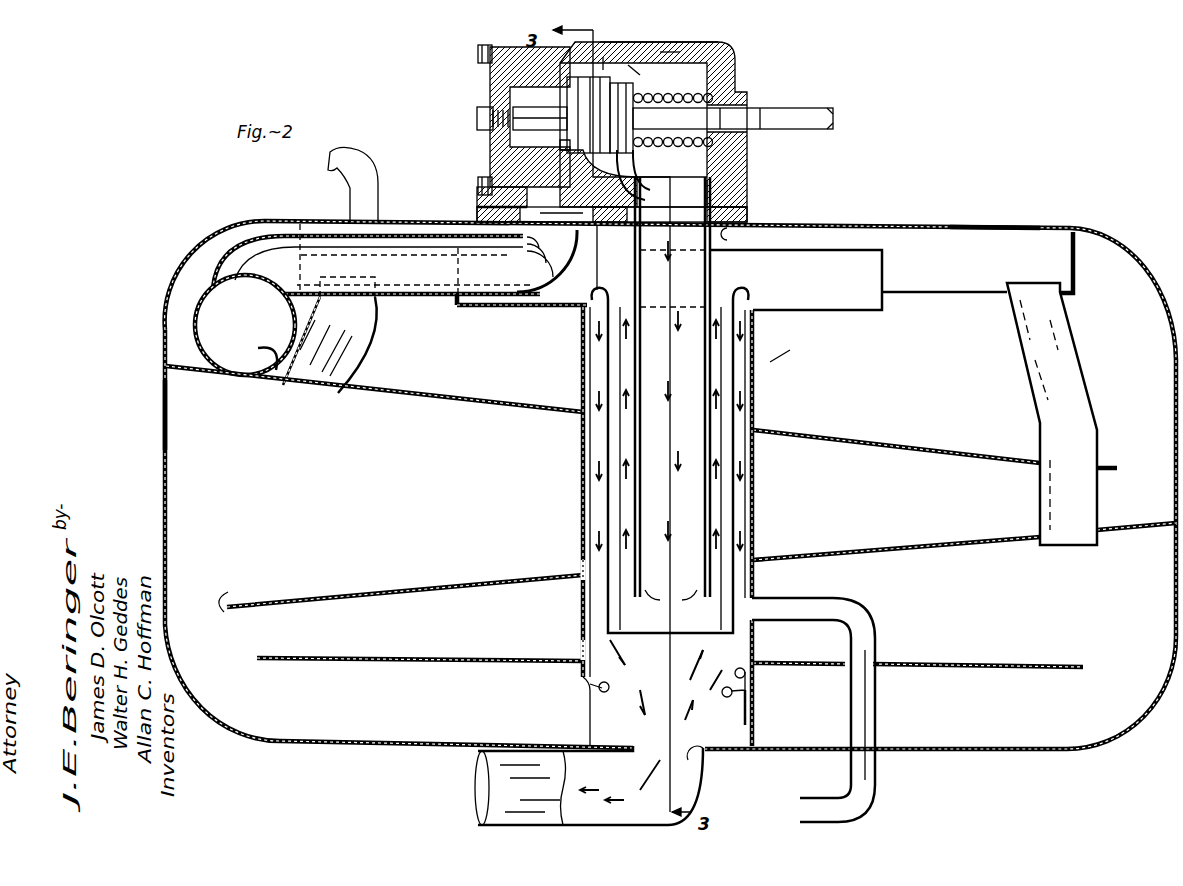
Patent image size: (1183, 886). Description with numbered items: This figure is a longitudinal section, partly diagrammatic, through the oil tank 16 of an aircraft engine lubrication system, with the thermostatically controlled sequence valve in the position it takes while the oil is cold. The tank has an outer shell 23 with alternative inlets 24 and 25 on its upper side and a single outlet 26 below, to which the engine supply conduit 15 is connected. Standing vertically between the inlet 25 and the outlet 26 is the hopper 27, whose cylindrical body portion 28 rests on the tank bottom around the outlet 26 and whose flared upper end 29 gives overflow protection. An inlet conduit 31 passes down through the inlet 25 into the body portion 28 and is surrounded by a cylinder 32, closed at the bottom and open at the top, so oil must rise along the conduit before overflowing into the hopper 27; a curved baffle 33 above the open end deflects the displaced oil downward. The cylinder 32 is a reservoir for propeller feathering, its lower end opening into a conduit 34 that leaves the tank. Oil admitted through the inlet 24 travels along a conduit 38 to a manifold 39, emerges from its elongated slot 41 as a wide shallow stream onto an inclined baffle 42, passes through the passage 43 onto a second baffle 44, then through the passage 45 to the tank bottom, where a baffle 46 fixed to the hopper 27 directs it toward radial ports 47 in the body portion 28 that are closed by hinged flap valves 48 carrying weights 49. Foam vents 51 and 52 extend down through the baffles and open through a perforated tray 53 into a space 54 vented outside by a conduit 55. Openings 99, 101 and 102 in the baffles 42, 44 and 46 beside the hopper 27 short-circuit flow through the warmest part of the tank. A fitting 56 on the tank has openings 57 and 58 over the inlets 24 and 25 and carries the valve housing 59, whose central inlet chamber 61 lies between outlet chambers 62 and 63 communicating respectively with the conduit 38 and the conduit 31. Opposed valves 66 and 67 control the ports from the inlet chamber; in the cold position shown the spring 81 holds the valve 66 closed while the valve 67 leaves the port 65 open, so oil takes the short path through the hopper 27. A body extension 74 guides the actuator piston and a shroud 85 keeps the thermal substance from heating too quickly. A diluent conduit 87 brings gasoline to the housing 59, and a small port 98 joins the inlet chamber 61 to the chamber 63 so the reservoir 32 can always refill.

The engine supply conduit 15 is at (478, 770).
The oil tank 16 is at (186, 256).
The outer shell 23 is at (163, 410).
The tank inlet 24 is at (535, 226).
The tank inlet 25 is at (727, 232).
The outlet 26 is at (708, 766).
The hopper 27 is at (768, 363).
The cylindrical body portion 28 is at (758, 396).
The flared upper end 29 is at (884, 280).
The inlet conduit 31 is at (705, 268).
The cylinder 32 is at (600, 460).
The curved baffle 33 is at (736, 292).
The conduit 34 is at (870, 620).
The conduit 38 is at (278, 232).
The manifold 39 is at (196, 322).
The slot 41 is at (275, 352).
The baffle 42 is at (445, 405).
The passage 43 is at (1116, 466).
The baffle 44 is at (405, 582).
The passage 45 is at (231, 589).
The baffle 46 is at (412, 656).
The radial ports 47 is at (757, 711).
The flap valves 48 is at (600, 712).
The weights 49 is at (723, 696).
The foam vent 51 is at (372, 356).
The foam vent 52 is at (1080, 358).
The perforated tray 53 is at (1080, 252).
The space 54 is at (990, 224).
The conduit 55 is at (378, 186).
The fitting 56 is at (482, 210).
The opening 57 is at (527, 205).
The opening 58 is at (740, 192).
The housing 59 is at (740, 70).
The central inlet chamber 61 is at (603, 57).
The outlet chamber 62 is at (492, 92).
The outlet chamber 63 is at (725, 50).
The port 65 is at (668, 52).
The valve 66 is at (560, 148).
The valve 67 is at (628, 65).
The body extension 74 is at (533, 106).
The spring 81 is at (688, 94).
The shroud 85 is at (600, 105).
The conduit 87 is at (805, 105).
The port 98 is at (640, 180).
The opening 99 is at (580, 420).
The opening 101 is at (578, 566).
The opening 102 is at (578, 646).